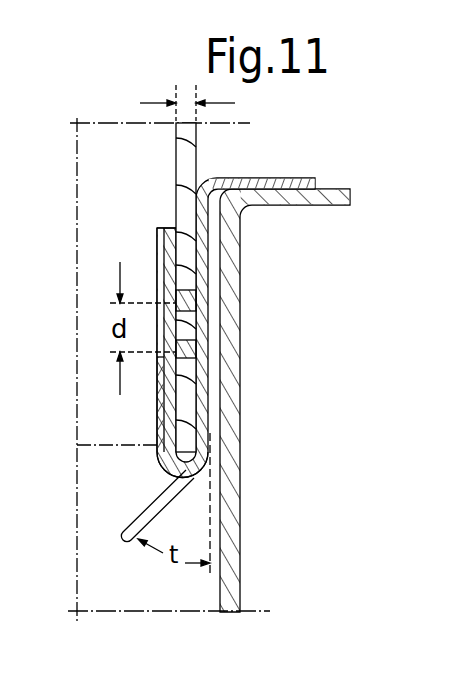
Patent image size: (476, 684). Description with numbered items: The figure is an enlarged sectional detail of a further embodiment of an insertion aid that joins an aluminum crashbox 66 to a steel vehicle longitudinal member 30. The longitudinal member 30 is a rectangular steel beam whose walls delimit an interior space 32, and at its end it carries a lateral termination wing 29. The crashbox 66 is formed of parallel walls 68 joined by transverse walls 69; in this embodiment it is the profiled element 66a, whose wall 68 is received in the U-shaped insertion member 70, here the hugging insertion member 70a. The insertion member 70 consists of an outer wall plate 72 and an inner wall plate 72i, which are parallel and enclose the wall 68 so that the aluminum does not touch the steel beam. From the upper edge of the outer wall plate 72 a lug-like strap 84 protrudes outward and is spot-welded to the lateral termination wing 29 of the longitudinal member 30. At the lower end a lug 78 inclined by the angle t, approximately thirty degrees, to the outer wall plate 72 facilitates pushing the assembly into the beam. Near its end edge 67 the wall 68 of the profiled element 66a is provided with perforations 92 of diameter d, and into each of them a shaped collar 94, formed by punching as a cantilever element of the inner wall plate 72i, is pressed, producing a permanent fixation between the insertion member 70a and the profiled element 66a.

The lateral termination wing 29 is at (338, 196).
The vehicle longitudinal member 30 is at (248, 562).
The interior space 32 is at (157, 592).
The crashbox 66 is at (125, 105).
The profiled element 66a is at (150, 146).
The end edge 67 is at (124, 453).
The crashbox wall 68 is at (185, 197).
The transverse wall 69 is at (103, 153).
The insertion member 70 is at (78, 447).
The hugging insertion member 70a is at (146, 261).
The outer wall plate 72 is at (199, 248).
The inner wall plate 72i is at (153, 238).
The lug 78 is at (122, 532).
The lug-like strap 84 is at (312, 181).
The perforation 92 is at (177, 328).
The shaped collar 94 is at (197, 330).